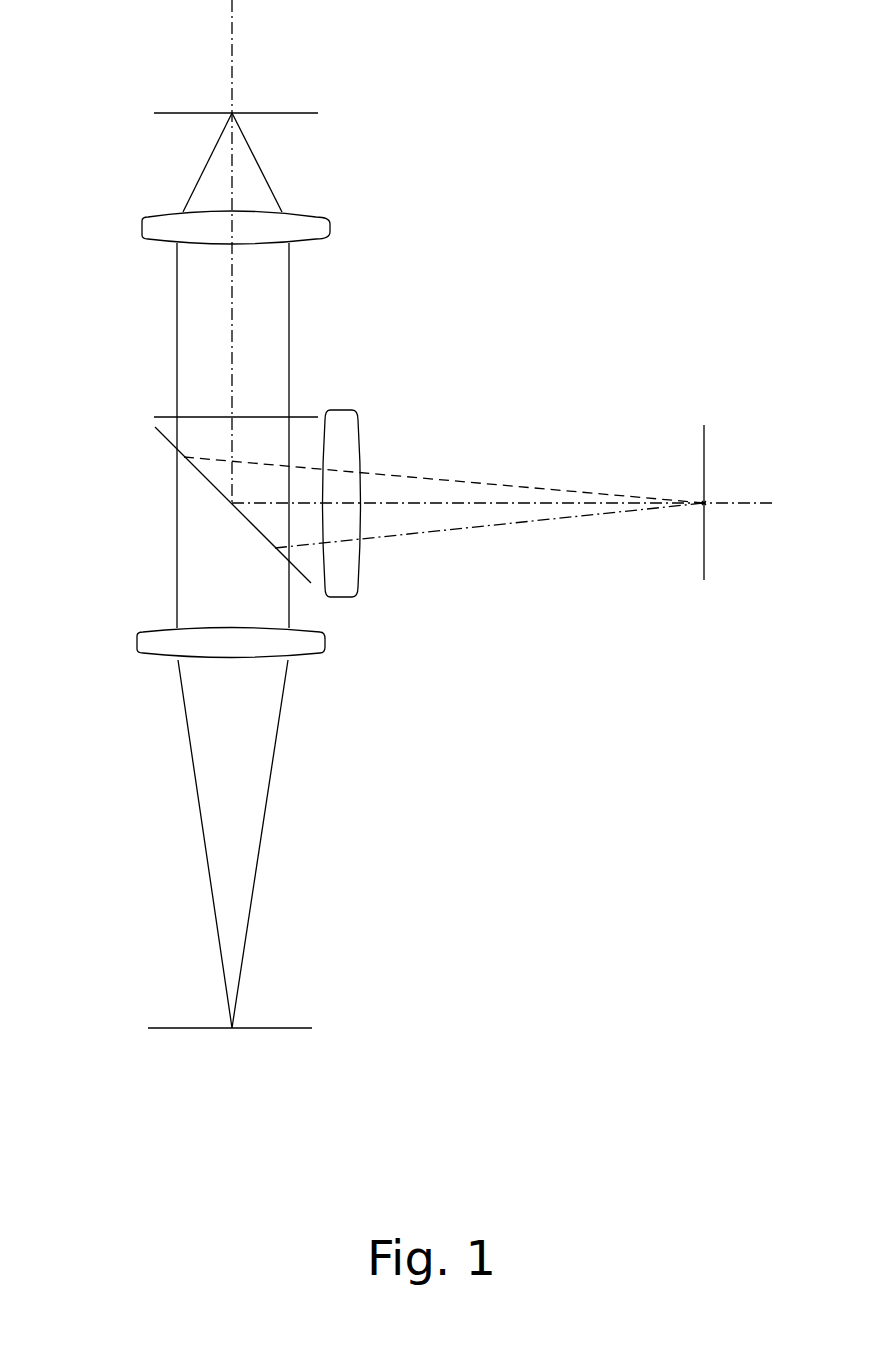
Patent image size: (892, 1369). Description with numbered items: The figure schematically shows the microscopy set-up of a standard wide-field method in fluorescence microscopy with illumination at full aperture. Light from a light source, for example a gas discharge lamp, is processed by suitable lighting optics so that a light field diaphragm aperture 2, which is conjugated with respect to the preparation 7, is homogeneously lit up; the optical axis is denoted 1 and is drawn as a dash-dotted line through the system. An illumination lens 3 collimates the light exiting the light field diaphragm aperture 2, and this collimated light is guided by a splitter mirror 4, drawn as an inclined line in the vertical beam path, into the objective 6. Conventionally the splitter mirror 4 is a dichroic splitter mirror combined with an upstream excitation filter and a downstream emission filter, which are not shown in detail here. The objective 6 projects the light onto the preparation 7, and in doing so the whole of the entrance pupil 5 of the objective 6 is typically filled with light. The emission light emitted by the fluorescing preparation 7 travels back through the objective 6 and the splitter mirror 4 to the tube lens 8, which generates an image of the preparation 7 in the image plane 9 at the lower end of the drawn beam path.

The optical axis 1 is at (733, 505).
The light field diaphragm aperture 2 is at (706, 440).
The illumination lens 3 is at (341, 410).
The splitter mirror 4 is at (167, 440).
The entrance pupil 5 is at (160, 415).
The objective 6 is at (330, 228).
The preparation 7 is at (154, 113).
The tube lens 8 is at (137, 642).
The image plane 9 is at (170, 1028).